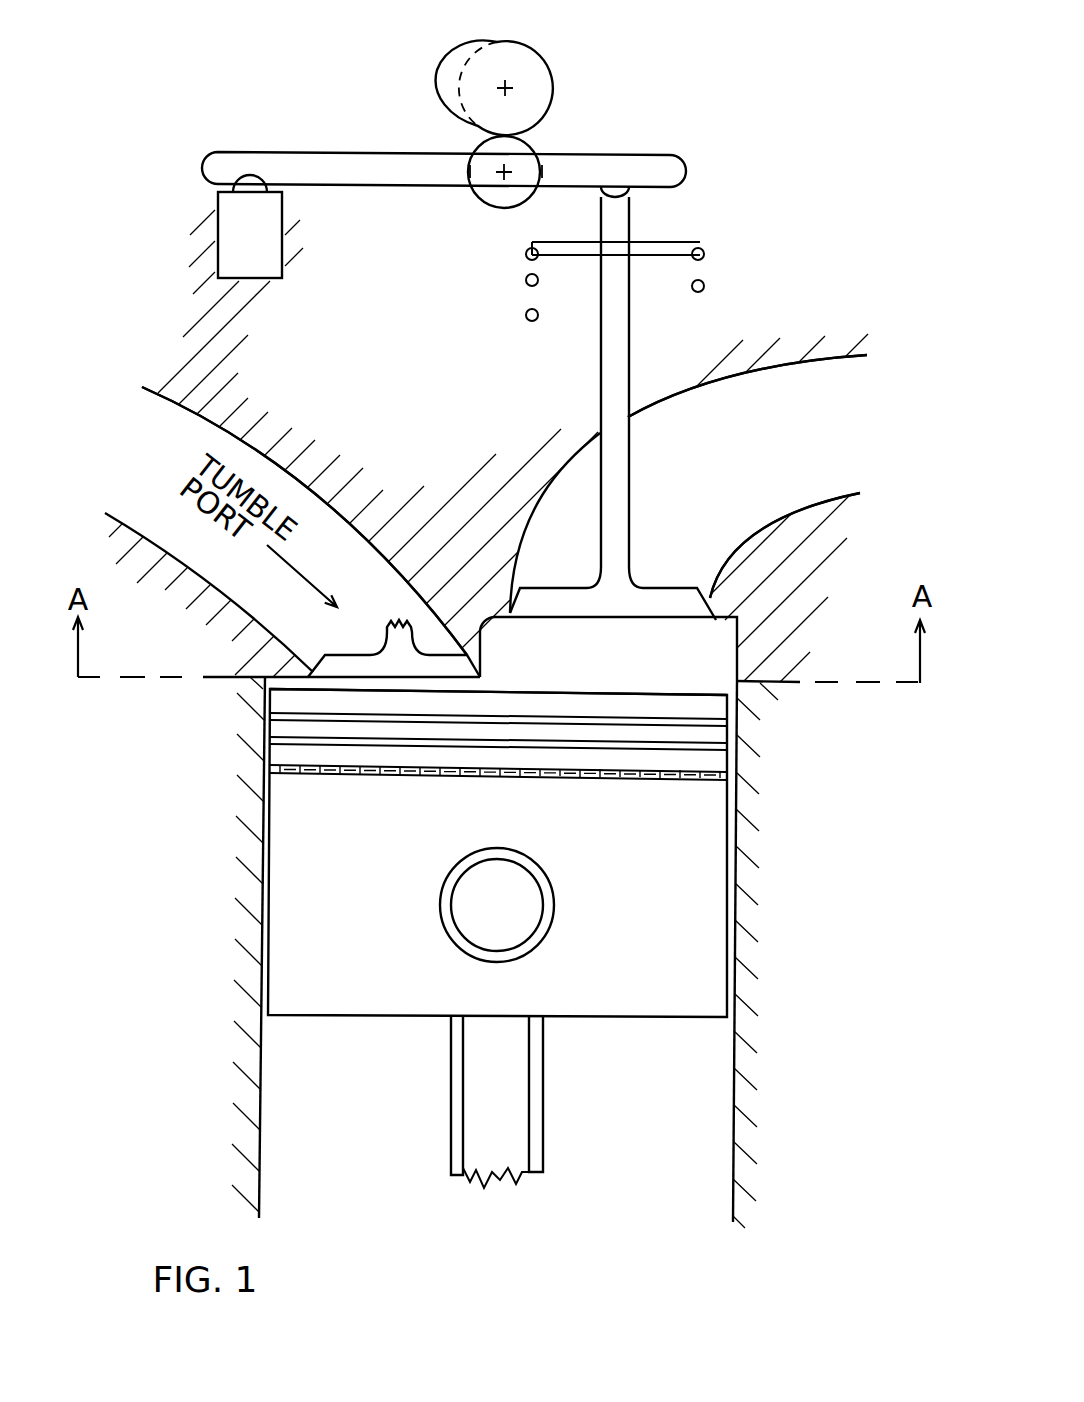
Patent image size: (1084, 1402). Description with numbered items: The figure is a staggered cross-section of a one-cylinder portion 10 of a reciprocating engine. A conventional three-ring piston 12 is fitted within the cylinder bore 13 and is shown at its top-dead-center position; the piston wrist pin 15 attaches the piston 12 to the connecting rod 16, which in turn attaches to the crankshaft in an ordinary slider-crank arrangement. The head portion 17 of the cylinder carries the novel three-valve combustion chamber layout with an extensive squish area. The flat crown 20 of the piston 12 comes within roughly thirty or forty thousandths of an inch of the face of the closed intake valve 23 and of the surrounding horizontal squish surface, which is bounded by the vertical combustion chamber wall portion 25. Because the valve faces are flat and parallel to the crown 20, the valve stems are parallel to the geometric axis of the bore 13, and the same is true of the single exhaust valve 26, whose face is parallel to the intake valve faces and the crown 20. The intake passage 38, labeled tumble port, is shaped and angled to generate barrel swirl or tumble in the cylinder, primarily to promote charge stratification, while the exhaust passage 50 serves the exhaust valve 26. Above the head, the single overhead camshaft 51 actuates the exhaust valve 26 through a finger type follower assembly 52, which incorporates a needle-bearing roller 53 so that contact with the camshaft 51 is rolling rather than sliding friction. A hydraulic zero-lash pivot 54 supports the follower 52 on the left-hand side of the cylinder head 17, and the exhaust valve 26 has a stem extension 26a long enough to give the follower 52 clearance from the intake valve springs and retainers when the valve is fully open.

The one-cylinder portion 10 is at (150, 838).
The piston assembly 12 is at (633, 1041).
The cylinder bore 13 is at (259, 1077).
The piston wrist pin 15 is at (458, 880).
The connecting rod 16 is at (452, 1082).
The cylinder head 17 is at (423, 480).
The piston crown 20 is at (690, 693).
The intake valve 23 is at (338, 655).
The combustion chamber wall portion 25 is at (481, 650).
The exhaust valve 26 is at (686, 590).
The stem extension 26a is at (631, 206).
The intake passage 38 is at (350, 592).
The exhaust passage 50 is at (746, 463).
The single overhead camshaft 51 is at (523, 40).
The finger type follower assembly 52 is at (412, 227).
The needle-bearing roller 53 is at (480, 148).
The hydraulic zero-lash pivot 54 is at (228, 253).